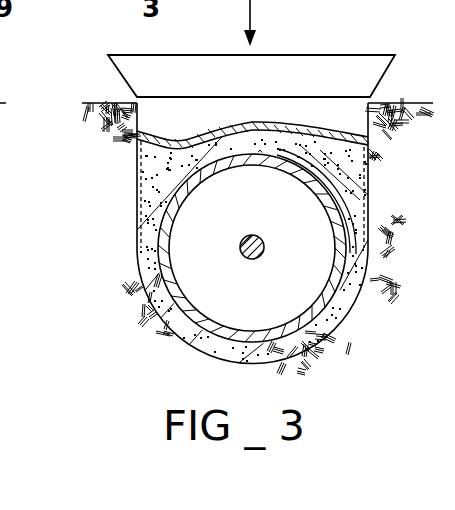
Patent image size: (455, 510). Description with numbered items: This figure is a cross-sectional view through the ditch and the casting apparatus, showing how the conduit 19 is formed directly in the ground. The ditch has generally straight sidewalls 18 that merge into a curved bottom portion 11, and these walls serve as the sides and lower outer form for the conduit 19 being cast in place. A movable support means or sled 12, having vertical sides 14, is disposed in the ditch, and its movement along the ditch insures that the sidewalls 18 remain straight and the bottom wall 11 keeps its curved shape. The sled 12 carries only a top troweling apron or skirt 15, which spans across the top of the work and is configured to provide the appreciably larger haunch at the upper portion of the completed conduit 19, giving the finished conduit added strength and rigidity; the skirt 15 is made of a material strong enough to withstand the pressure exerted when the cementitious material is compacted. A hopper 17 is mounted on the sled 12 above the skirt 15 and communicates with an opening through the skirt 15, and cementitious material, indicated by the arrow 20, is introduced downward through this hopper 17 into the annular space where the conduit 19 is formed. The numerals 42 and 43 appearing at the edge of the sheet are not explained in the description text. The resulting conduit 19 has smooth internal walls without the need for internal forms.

The bottom portion 11 is at (337, 330).
The sled 12 is at (381, 88).
The vertical sides 14 is at (370, 176).
The skirt 15 is at (165, 136).
The hopper 17 is at (203, 55).
The sidewalls 18 is at (370, 202).
The conduit 19 is at (175, 333).
The cementitious material 20 is at (255, 8).
The element 42 is at (442, 287).
The element 43 is at (446, 255).